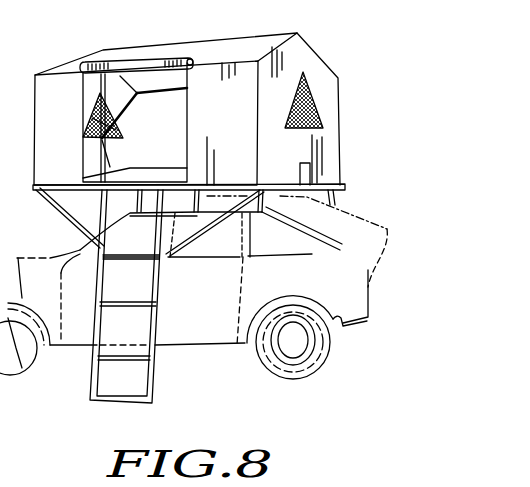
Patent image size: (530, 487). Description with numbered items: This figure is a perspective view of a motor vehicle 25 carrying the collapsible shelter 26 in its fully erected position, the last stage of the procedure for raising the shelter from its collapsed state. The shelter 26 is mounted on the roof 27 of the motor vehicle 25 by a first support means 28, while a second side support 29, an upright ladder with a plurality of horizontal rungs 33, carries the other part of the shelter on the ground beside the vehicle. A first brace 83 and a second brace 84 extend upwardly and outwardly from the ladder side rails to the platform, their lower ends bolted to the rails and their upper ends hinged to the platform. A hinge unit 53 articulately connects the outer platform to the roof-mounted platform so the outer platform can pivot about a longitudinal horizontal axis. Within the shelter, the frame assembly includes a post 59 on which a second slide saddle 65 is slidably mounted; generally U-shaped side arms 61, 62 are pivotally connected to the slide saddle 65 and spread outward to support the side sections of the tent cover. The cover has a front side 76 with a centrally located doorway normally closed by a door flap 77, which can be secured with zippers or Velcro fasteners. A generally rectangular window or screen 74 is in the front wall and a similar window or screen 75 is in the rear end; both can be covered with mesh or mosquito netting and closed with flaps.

The motor vehicle 25 is at (347, 310).
The collapsible shelter 26 is at (322, 56).
The roof 27 is at (293, 204).
The first support means 28 is at (342, 184).
The second side support 29 is at (160, 358).
The rungs 33 is at (133, 267).
The hinge unit 53 is at (101, 173).
The post 59 is at (99, 154).
The side arm 61 is at (140, 95).
The side arm 62 is at (92, 130).
The second slide saddle 65 is at (107, 143).
The window or screen 74 is at (318, 107).
The window or screen 75 is at (97, 106).
The front side 76 is at (242, 115).
The door flap 77 is at (134, 61).
The first brace 83 is at (62, 216).
The second brace 84 is at (218, 216).